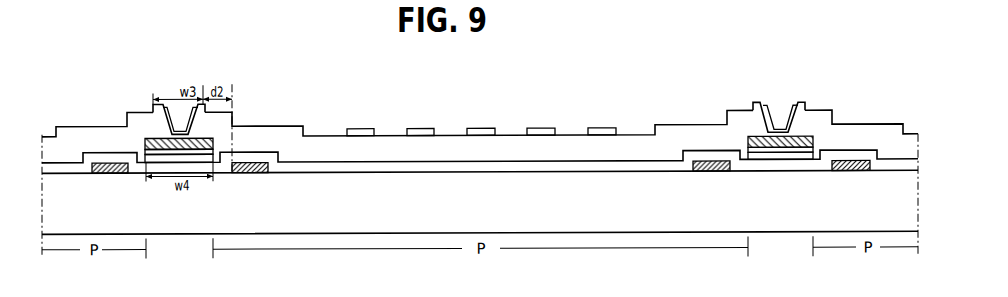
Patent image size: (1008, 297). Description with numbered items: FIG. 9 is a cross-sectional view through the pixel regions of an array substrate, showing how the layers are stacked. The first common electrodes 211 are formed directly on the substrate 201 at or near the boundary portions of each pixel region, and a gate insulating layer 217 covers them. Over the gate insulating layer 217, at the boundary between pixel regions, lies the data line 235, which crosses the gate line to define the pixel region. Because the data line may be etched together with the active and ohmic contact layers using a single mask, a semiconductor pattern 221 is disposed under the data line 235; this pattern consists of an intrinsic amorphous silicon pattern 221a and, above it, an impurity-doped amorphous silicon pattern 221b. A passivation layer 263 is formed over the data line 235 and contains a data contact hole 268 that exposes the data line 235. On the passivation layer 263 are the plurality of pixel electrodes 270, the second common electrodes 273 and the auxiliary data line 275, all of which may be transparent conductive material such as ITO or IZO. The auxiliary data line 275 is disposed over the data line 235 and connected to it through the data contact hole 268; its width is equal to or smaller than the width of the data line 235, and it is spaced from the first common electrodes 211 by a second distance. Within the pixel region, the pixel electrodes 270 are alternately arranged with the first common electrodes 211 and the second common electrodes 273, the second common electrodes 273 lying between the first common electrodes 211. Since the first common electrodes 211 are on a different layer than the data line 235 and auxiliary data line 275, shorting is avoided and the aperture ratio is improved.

The substrate 201 is at (877, 204).
The first common electrodes 211 is at (113, 175).
The gate insulating layer 217 is at (422, 168).
The semiconductor pattern 221 is at (479, 188).
The intrinsic amorphous silicon pattern 221a is at (170, 157).
The impurity-doped amorphous silicon pattern 221b is at (188, 154).
The data line 235 is at (200, 139).
The passivation layer 263 is at (497, 155).
The data contact hole 268 is at (177, 100).
The pixel electrodes 270 is at (358, 128).
The second common electrodes 273 is at (420, 128).
The auxiliary data line 275 is at (203, 108).